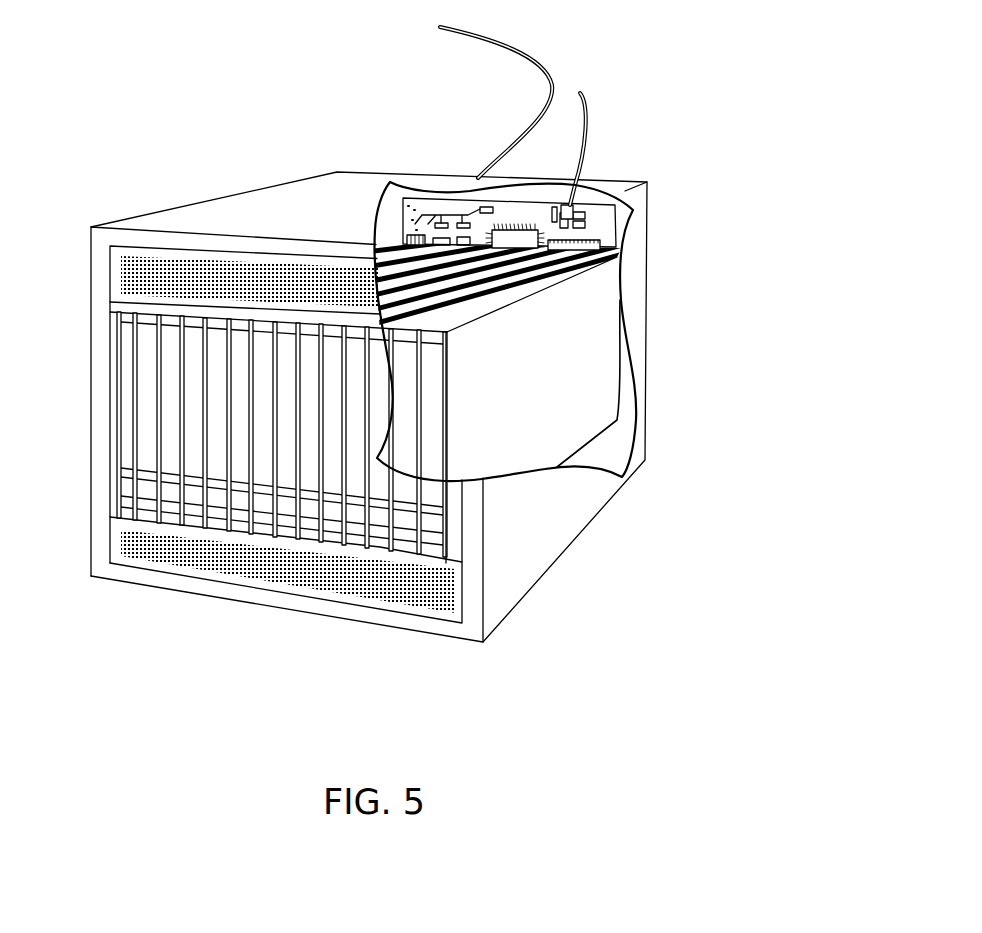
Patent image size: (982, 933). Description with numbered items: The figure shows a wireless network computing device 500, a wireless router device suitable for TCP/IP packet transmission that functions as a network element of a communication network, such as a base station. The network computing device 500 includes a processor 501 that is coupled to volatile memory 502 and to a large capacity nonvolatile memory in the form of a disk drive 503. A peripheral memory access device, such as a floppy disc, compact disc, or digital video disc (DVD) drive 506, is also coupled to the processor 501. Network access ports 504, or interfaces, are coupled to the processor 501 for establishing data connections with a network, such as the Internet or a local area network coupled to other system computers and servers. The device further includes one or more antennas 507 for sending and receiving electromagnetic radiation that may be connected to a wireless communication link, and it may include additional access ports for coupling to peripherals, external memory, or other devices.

The network computing device 500 is at (98, 125).
The processor 501 is at (517, 242).
The volatile memory 502 is at (600, 247).
The disk drive 503 is at (170, 373).
The network access ports 504 is at (533, 53).
The digital video disc (DVD) drive 506 is at (409, 239).
The antennas 507 is at (569, 212).